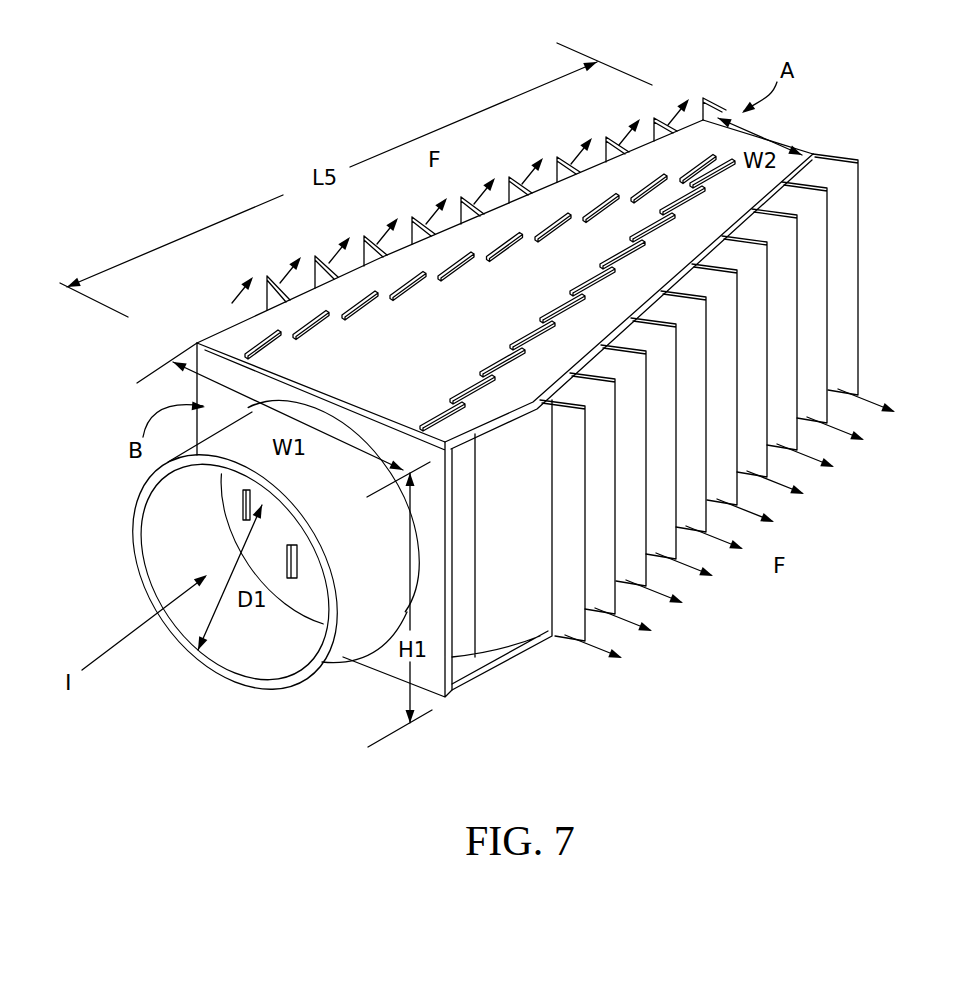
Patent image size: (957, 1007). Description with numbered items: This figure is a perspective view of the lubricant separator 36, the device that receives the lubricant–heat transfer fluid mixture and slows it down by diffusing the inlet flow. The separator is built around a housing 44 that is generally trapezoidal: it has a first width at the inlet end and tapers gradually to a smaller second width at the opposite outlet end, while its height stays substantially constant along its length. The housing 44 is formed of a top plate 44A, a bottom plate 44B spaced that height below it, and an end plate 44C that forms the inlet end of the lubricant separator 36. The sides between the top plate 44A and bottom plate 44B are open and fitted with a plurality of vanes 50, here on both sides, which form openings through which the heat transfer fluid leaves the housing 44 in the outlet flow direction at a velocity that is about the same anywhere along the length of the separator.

The lubricant separator 36 is at (777, 127).
The housing 44 is at (393, 700).
The top plate 44A is at (420, 358).
The bottom plate 44B is at (482, 676).
The end plate 44C is at (378, 657).
The vanes 50 is at (562, 401).